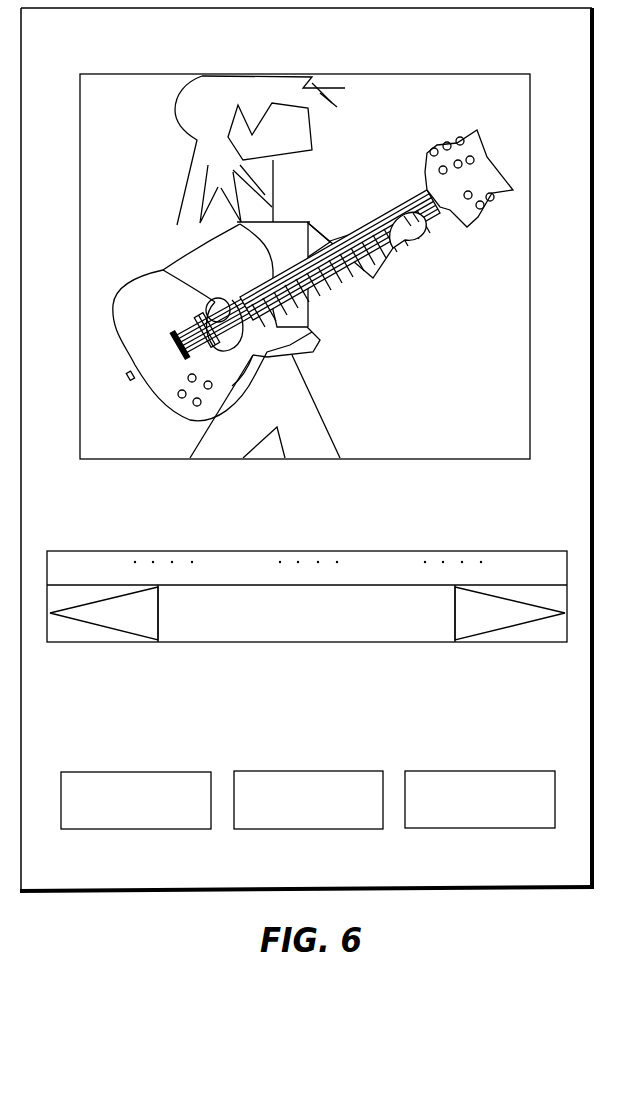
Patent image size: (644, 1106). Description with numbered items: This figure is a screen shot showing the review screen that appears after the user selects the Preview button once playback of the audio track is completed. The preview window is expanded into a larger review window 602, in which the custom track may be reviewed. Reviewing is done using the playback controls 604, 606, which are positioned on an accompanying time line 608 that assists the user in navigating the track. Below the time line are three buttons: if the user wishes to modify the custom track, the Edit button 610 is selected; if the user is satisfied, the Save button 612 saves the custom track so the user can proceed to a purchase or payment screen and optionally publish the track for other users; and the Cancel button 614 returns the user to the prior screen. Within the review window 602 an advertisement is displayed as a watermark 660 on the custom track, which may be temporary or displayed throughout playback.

The review window 602 is at (424, 74).
The playback control 604 is at (103, 632).
The playback control 606 is at (508, 626).
The time line 608 is at (455, 551).
The Edit button 610 is at (135, 772).
The Save button 612 is at (308, 771).
The Cancel button 614 is at (480, 771).
The watermark 660 is at (466, 410).